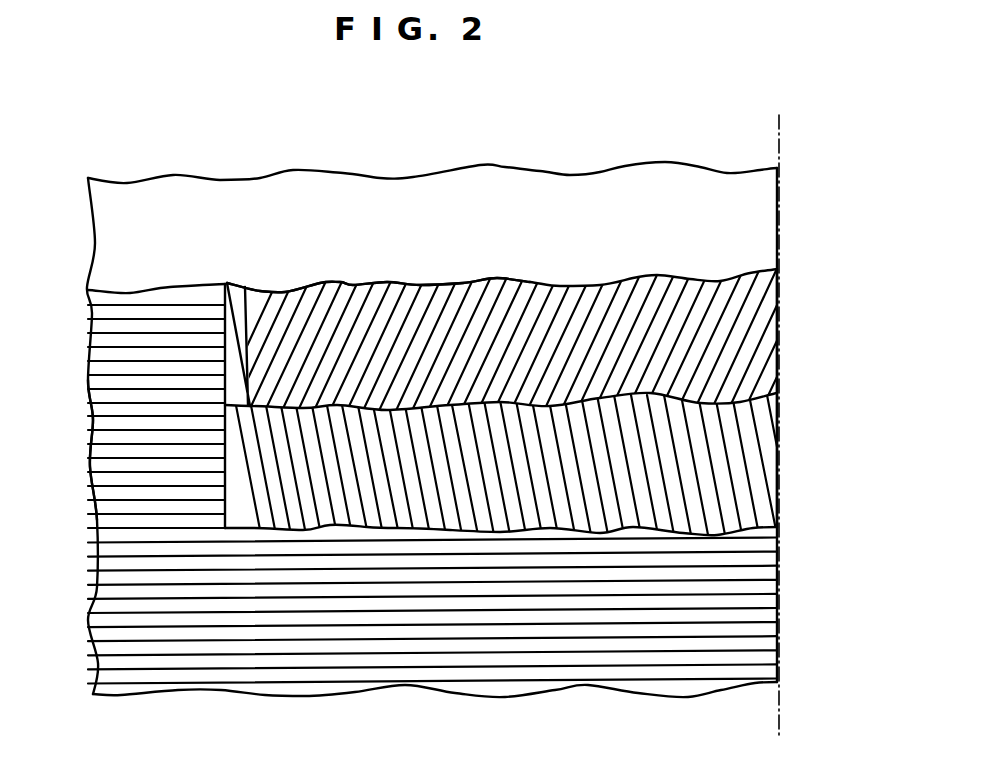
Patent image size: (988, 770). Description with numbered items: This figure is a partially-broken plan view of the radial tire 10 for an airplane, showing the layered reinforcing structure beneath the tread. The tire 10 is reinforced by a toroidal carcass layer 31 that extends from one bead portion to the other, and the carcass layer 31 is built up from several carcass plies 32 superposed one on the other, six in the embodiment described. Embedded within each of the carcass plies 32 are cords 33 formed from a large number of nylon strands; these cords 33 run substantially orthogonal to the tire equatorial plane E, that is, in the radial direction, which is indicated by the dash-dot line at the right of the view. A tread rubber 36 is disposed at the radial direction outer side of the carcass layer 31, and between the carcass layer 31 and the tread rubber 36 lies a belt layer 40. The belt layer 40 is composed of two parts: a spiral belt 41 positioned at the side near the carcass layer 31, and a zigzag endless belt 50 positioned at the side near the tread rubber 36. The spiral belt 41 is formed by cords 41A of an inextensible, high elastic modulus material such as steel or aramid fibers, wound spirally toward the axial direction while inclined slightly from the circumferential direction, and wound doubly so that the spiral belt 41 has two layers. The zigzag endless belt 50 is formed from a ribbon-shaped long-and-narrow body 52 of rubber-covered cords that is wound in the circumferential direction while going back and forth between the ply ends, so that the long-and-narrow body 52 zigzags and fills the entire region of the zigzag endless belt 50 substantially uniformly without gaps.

The radial tire for an airplane 10 is at (201, 178).
The carcass layer 31 is at (88, 594).
The carcass plies 32 is at (104, 426).
The cords 33 is at (122, 479).
The tread rubber 36 is at (504, 186).
The belt layer 40 is at (807, 398).
The spiral belt 41 is at (768, 455).
The cords 41A is at (765, 497).
The zigzag endless belt 50 is at (758, 318).
The ribbon-shaped long-and-narrow body 52 is at (433, 314).
The tire equatorial plane E is at (775, 138).